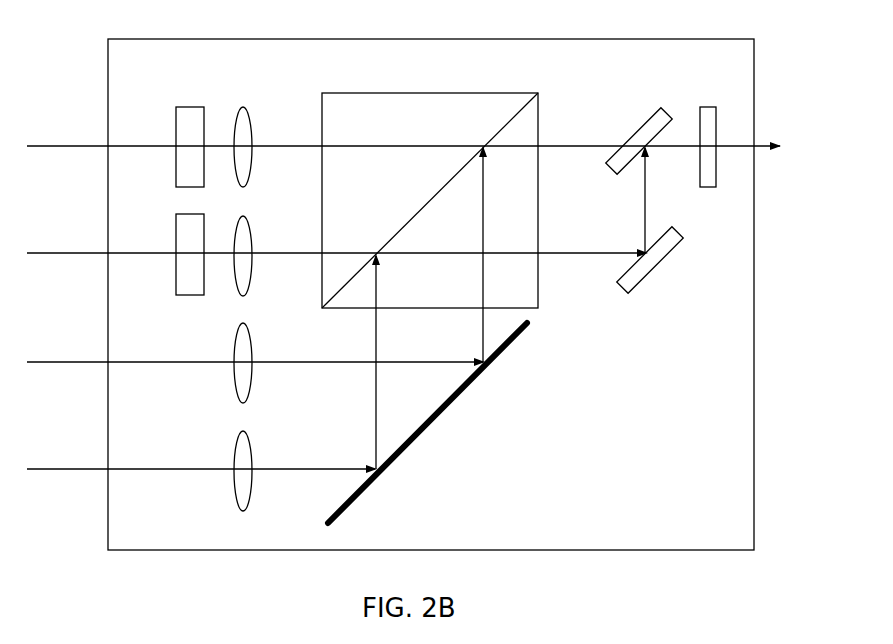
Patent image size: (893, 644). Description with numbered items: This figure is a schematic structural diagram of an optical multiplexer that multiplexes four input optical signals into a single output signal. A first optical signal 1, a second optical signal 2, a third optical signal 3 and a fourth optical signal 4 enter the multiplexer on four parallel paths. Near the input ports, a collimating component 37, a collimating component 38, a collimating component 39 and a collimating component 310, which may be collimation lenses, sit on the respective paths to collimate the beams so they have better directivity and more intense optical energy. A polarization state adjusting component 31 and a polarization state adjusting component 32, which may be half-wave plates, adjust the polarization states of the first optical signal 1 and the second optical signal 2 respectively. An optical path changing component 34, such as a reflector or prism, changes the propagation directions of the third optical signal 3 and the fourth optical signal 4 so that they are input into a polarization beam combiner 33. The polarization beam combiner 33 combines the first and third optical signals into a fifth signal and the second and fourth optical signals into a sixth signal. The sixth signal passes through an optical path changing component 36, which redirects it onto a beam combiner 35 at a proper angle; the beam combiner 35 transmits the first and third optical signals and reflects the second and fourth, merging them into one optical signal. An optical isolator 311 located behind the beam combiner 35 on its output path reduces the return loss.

The first optical signal 1 is at (80, 127).
The second optical signal 2 is at (80, 235).
The third optical signal 3 is at (80, 343).
The fourth optical signal 4 is at (80, 451).
The polarization state adjusting component 31 is at (188, 106).
The polarization state adjusting component 32 is at (188, 296).
The polarization beam combiner 33 is at (430, 92).
The optical path changing component 34 is at (430, 429).
The beam combiner 35 is at (646, 121).
The optical path changing component 36 is at (657, 267).
The collimating component 37 is at (250, 126).
The collimating component 38 is at (250, 234).
The collimating component 39 is at (250, 341).
The collimating component 310 is at (250, 449).
The optical isolator 311 is at (708, 106).